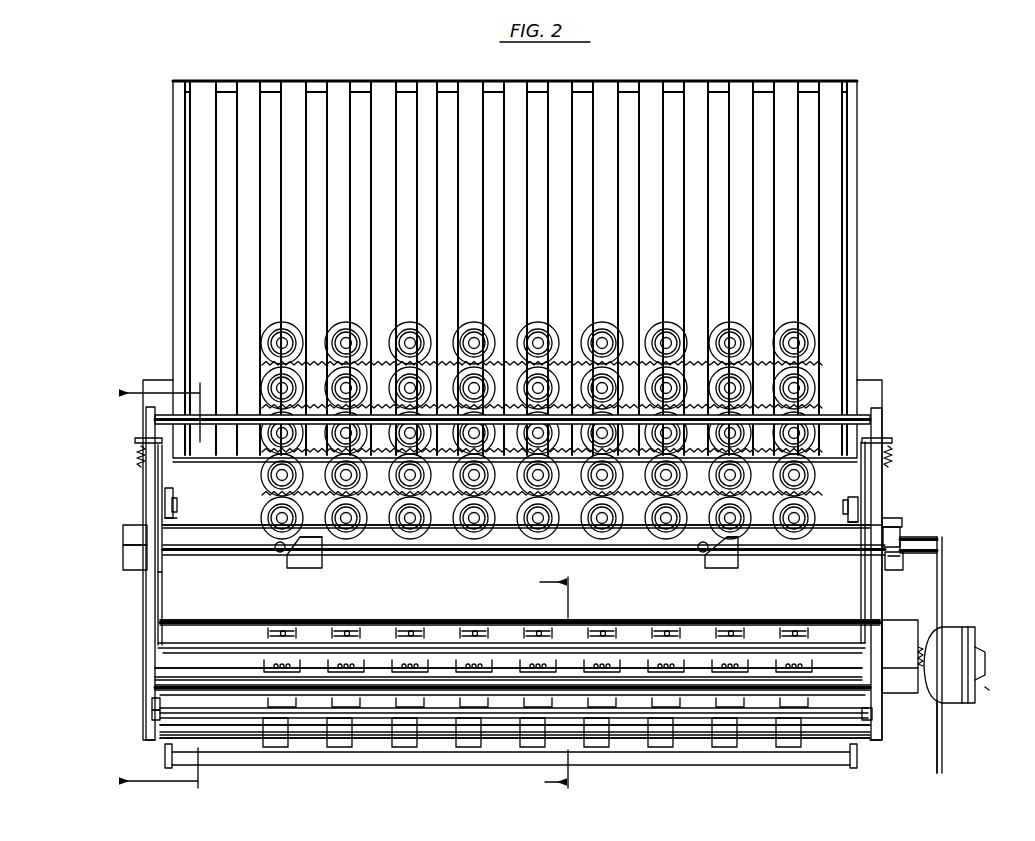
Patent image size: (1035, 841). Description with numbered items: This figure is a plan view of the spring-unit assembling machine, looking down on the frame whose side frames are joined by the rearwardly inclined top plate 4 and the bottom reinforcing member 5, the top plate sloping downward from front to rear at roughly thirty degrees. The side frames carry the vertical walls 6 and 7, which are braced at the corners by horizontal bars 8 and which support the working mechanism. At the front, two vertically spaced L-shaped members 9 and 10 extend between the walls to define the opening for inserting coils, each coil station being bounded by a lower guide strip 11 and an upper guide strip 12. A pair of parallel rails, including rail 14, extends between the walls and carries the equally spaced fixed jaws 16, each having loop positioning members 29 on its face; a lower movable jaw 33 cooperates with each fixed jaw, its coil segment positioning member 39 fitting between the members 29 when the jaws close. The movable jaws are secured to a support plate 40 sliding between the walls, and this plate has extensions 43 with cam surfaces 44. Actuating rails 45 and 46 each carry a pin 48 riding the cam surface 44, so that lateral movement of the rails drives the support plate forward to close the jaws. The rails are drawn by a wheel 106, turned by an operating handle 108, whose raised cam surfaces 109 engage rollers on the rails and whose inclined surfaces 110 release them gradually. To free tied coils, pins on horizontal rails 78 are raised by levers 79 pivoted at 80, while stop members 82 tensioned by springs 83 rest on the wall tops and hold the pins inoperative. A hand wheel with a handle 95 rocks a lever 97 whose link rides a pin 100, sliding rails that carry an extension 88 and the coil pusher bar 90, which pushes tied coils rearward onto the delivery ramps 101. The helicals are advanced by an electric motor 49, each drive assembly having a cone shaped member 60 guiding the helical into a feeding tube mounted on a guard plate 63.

The delivery ramps 101 is at (832, 166).
The horizontal bars 8 is at (872, 410).
The bottom reinforcing member 5 is at (148, 588).
The stop members 82 is at (135, 440).
The springs 83 is at (137, 457).
The vertical wall 6 is at (147, 500).
The vertical wall 7 is at (881, 500).
The pin 100 is at (172, 500).
The lever 97 is at (173, 518).
The actuating rail 45 is at (123, 535).
The actuating rail 46 is at (123, 555).
The wheel 106 is at (902, 520).
The levers 79 is at (158, 560).
The pivot 80 is at (158, 572).
The horizontal rails 78 is at (865, 655).
The raised cam surfaces 109 is at (903, 560).
The inclined surfaces 110 is at (903, 566).
The upper support plate 40 is at (848, 602).
The extensions 43 is at (316, 562).
The cam surfaces 44 is at (300, 540).
The pin 48 is at (276, 552).
The rail 14 is at (538, 683).
The lower movable jaw 33 is at (348, 628).
The coil segment positioning member 39 is at (415, 625).
The fixed jaws 16 is at (267, 660).
The loop positioning members 29 is at (412, 665).
The upper guide strip 12 is at (268, 720).
The lower guide strip 11 is at (274, 746).
The handle 95 is at (463, 765).
The L-shaped member 10 is at (830, 725).
The L-shaped member 9 is at (860, 738).
The top plate 4 is at (855, 760).
The extension 88 is at (152, 705).
The coil pusher bar 90 is at (160, 715).
The cone shaped member 60 is at (923, 663).
The guard plate 63 is at (927, 695).
The electric motor 49 is at (989, 689).
The operating handle 108 is at (942, 745).